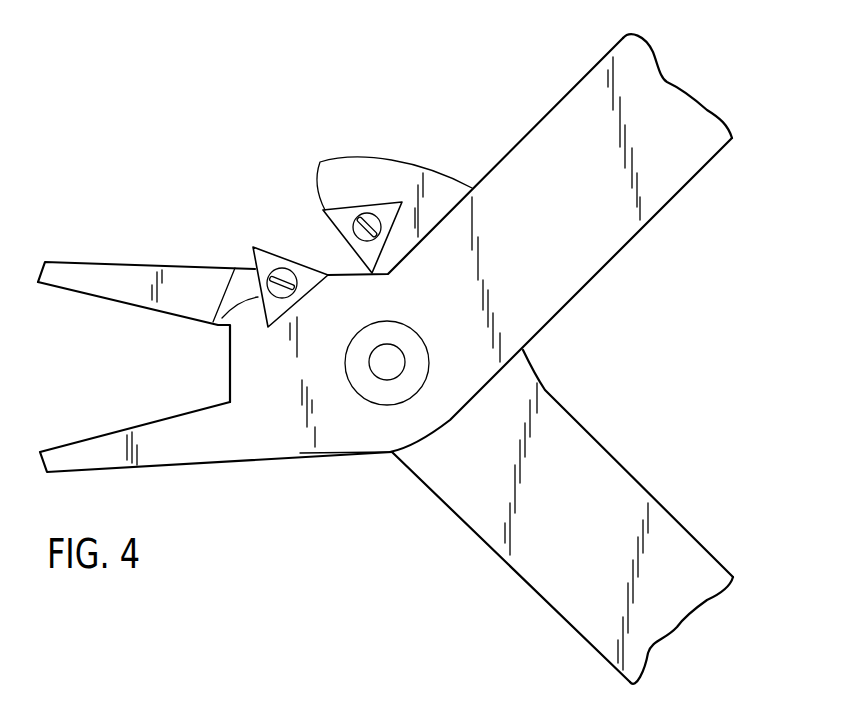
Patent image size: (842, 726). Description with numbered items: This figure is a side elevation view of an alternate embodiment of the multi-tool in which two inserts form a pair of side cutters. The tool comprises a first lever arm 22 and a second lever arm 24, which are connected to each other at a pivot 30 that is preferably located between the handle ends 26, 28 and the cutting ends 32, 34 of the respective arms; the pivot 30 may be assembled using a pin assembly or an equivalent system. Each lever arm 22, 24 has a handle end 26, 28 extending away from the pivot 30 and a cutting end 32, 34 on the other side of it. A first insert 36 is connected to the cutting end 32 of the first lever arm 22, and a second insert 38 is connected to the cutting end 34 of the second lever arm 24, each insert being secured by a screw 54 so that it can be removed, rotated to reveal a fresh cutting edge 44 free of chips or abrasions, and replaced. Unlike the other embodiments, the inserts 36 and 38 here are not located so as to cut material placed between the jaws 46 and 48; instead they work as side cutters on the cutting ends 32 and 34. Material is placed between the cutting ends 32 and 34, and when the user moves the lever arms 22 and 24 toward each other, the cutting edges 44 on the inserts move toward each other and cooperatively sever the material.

The first lever arm 22 is at (483, 180).
The second lever arm 24 is at (402, 468).
The handle end 26 is at (570, 92).
The handle end 28 is at (517, 578).
The pivot 30 is at (380, 368).
The cutting end 32 is at (437, 182).
The cutting end 34 is at (229, 297).
The first insert 36 is at (347, 213).
The second insert 38 is at (258, 245).
The cutting edge 44 is at (323, 222).
The jaw 46 is at (68, 272).
The jaw 48 is at (87, 458).
The screw 54 is at (375, 220).